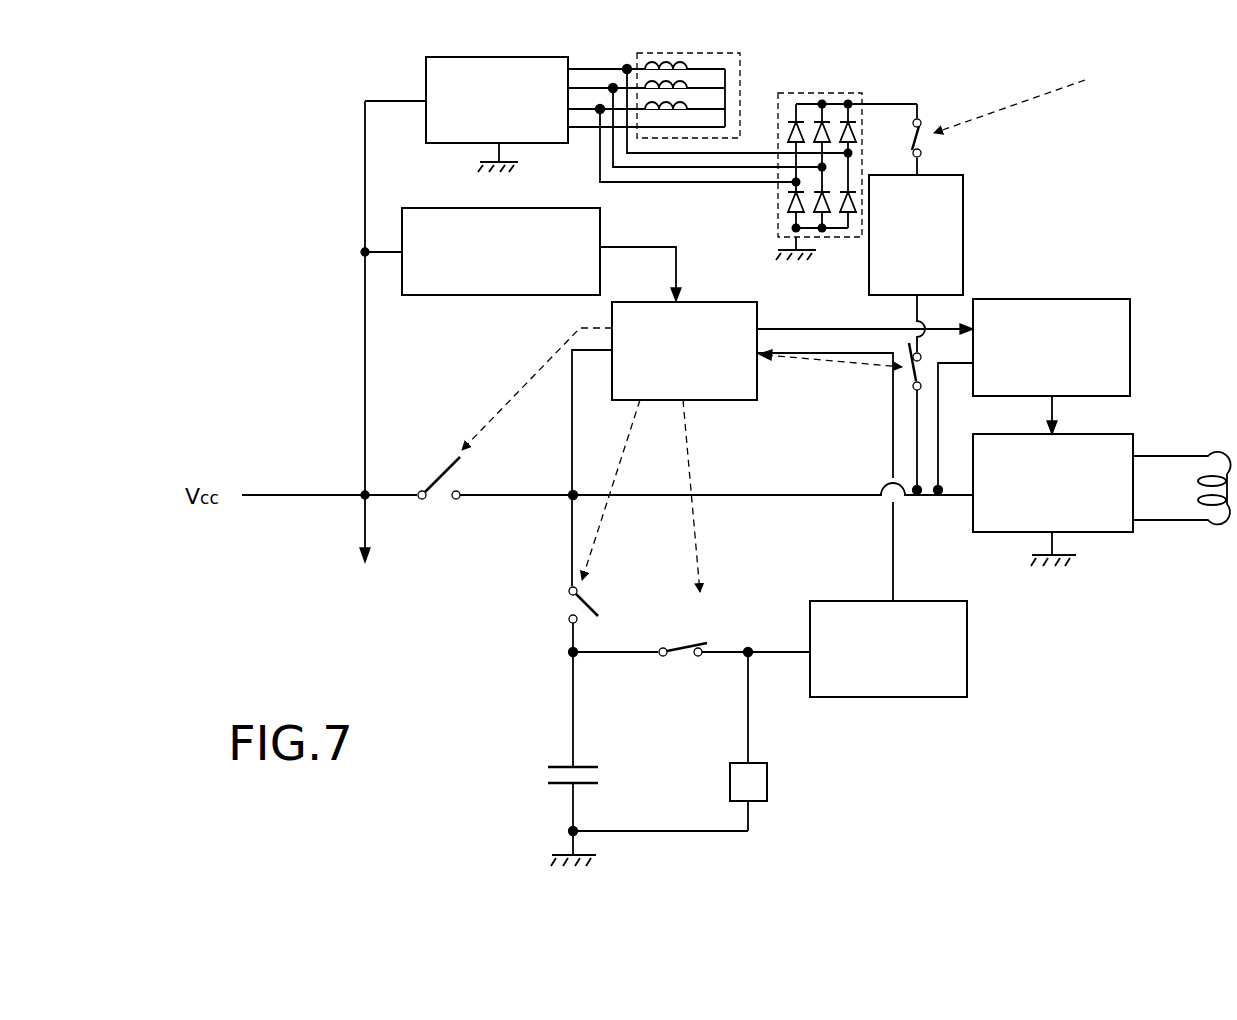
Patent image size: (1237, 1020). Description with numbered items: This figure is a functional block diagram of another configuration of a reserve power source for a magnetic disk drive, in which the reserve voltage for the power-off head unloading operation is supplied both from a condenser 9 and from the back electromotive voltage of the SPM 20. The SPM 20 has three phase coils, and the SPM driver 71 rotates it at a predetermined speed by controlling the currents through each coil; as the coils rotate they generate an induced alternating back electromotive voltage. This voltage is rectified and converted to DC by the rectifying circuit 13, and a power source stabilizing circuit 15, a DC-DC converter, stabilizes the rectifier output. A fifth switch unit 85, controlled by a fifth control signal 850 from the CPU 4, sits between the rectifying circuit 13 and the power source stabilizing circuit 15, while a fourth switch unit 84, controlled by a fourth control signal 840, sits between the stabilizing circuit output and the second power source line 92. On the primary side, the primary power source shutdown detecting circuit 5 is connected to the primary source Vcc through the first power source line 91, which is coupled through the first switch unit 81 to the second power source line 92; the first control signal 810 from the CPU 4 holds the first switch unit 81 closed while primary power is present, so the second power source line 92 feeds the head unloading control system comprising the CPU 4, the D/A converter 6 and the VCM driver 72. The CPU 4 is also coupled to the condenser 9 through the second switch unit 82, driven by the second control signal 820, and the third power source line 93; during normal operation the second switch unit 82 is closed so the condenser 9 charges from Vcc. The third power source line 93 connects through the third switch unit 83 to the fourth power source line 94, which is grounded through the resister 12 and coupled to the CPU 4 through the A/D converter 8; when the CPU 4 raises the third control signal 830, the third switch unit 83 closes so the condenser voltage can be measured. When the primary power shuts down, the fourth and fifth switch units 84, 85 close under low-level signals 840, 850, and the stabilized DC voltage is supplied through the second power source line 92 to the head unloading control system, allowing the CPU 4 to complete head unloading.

The SPM driver 71 is at (500, 55).
The SPM 20 is at (713, 53).
The rectifying circuit 13 is at (838, 92).
The fifth control signal 850 is at (1085, 80).
The fifth switch unit 85 is at (923, 143).
The power source stabilizing circuit 15 is at (963, 218).
The D/A converter 6 is at (1047, 298).
The CPU 4 is at (700, 300).
The primary power source shutdown detecting circuit 5 is at (470, 295).
The first control signal 810 is at (530, 380).
The first power source line 91 is at (286, 493).
The first switch unit 81 is at (436, 476).
The second power source line 92 is at (797, 490).
The fourth control signal 840 is at (847, 366).
The fourth switch unit 84 is at (906, 393).
The second control signal 820 is at (622, 457).
The third control signal 830 is at (696, 535).
The second switch unit 82 is at (597, 604).
The third switch unit 83 is at (680, 642).
The A/D converter 8 is at (969, 644).
The VCM driver 72 is at (1112, 534).
The third power source line 93 is at (571, 722).
The condenser 9 is at (602, 765).
The fourth power source line 94 is at (750, 732).
The resister 12 is at (768, 778).